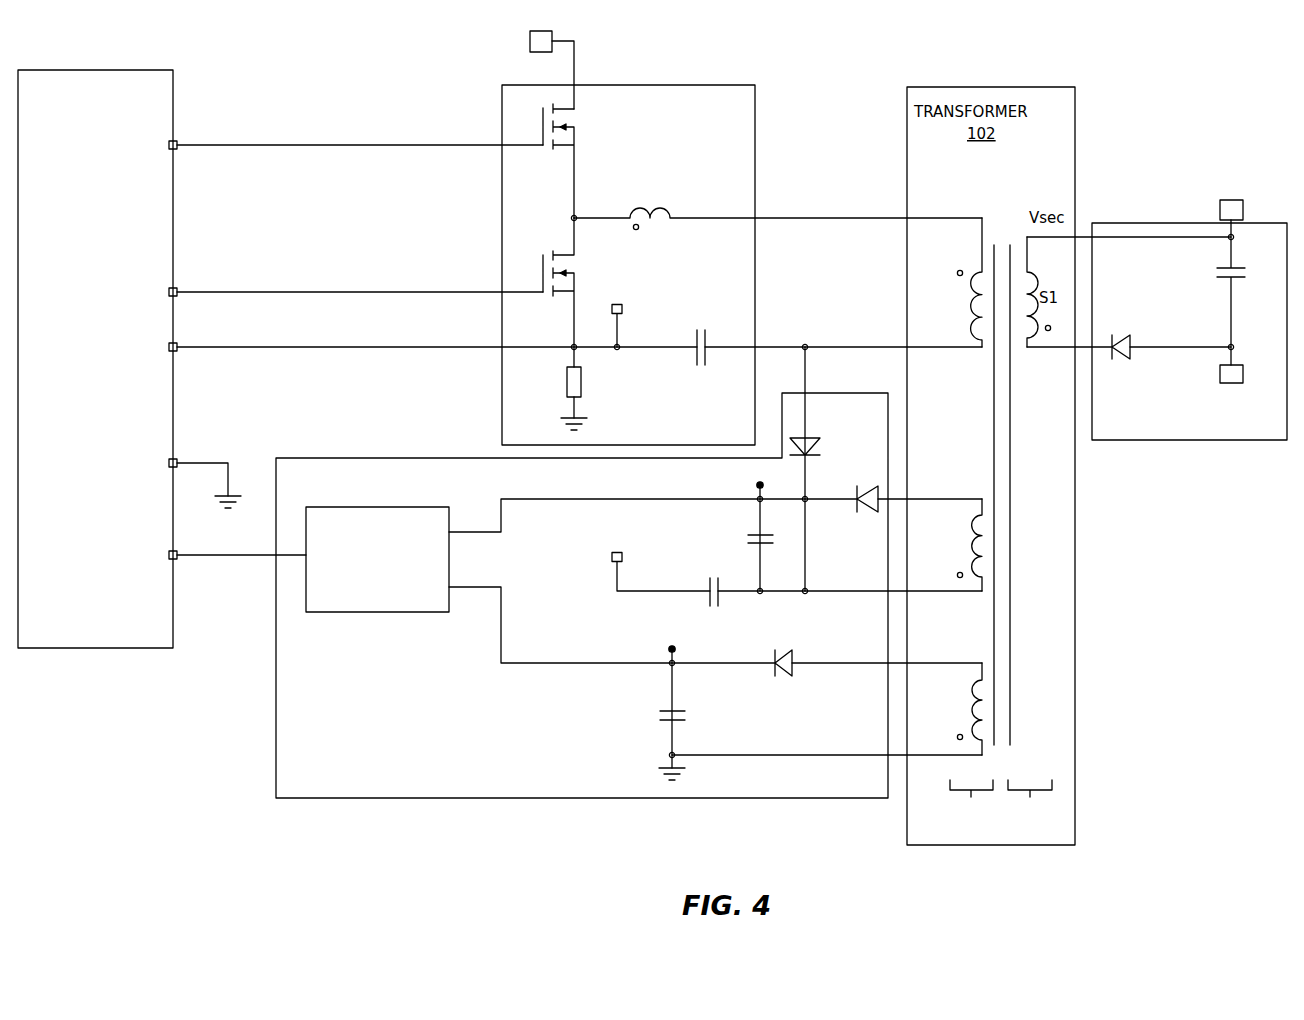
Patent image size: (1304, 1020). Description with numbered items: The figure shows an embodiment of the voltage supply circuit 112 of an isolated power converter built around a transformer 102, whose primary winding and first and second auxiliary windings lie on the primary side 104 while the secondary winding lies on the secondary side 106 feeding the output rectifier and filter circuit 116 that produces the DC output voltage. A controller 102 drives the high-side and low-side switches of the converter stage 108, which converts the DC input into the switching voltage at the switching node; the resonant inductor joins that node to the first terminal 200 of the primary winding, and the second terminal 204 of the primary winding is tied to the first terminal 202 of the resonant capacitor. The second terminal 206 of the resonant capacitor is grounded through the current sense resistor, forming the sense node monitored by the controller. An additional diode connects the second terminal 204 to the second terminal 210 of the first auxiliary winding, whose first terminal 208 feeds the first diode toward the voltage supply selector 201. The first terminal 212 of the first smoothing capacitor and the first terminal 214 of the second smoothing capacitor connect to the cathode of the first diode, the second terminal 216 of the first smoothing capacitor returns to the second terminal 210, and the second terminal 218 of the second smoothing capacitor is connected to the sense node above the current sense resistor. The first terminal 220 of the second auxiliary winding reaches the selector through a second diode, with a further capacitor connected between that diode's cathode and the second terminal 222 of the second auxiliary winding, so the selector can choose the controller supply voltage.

The transformer 102 is at (97, 359).
The converter stage 108 is at (740, 238).
The voltage supply circuit 112 is at (629, 571).
The output rectifier and filter circuit 116 is at (1189, 309).
The voltage supply selector 201 is at (377, 559).
The first terminal of the primary winding P1 200 is at (980, 212).
The second terminal of the primary winding P1 204 is at (980, 352).
The first terminal of the resonant capacitor C1 202 is at (710, 328).
The second terminal of the resonant capacitor C1 206 is at (695, 328).
The first terminal of the first auxiliary winding P2 208 is at (980, 494).
The second terminal of the first auxiliary winding P2 210 is at (980, 599).
The first terminal of the first smoothing capacitor C2 212 is at (750, 528).
The second terminal of the first smoothing capacitor C2 216 is at (752, 549).
The first terminal of the second smoothing capacitor C3 214 is at (725, 598).
The second terminal of the second smoothing capacitor C3 218 is at (704, 598).
The first terminal of the second auxiliary winding P3 220 is at (997, 667).
The second terminal of the second auxiliary winding P3 222 is at (998, 758).
The primary side of the transformer 104 is at (971, 802).
The secondary side of the transformer 106 is at (1030, 802).